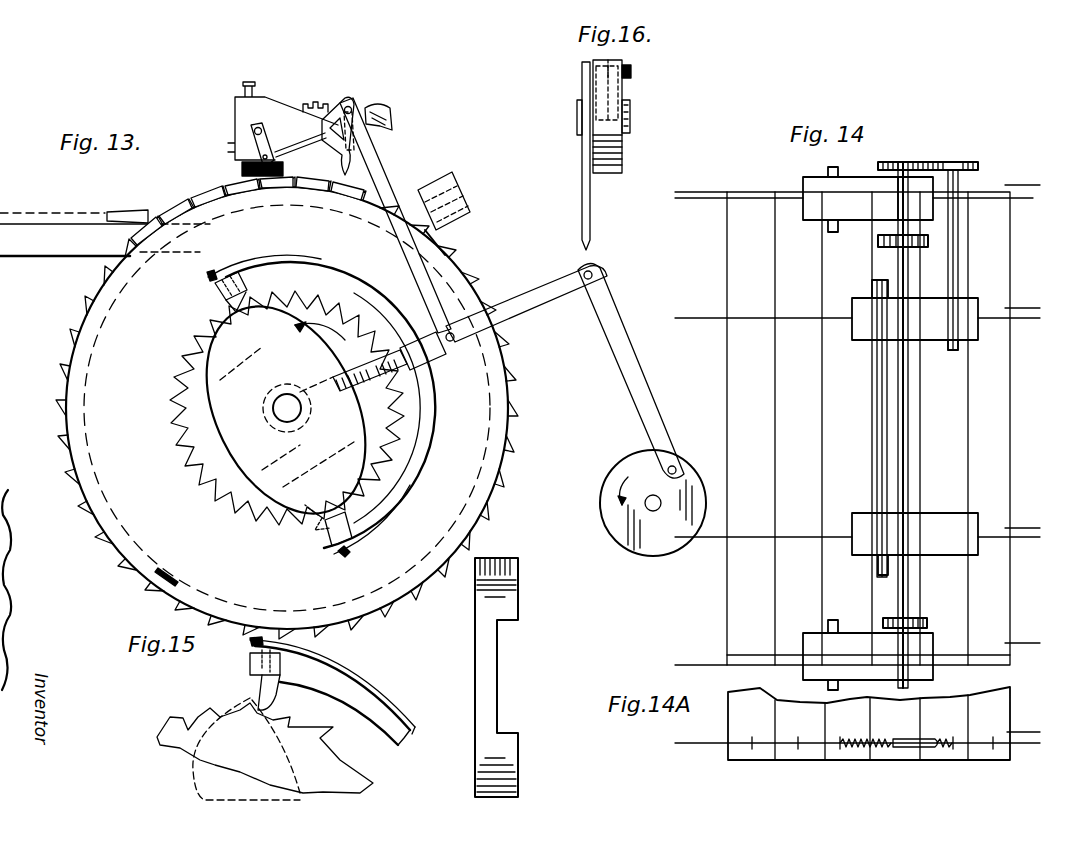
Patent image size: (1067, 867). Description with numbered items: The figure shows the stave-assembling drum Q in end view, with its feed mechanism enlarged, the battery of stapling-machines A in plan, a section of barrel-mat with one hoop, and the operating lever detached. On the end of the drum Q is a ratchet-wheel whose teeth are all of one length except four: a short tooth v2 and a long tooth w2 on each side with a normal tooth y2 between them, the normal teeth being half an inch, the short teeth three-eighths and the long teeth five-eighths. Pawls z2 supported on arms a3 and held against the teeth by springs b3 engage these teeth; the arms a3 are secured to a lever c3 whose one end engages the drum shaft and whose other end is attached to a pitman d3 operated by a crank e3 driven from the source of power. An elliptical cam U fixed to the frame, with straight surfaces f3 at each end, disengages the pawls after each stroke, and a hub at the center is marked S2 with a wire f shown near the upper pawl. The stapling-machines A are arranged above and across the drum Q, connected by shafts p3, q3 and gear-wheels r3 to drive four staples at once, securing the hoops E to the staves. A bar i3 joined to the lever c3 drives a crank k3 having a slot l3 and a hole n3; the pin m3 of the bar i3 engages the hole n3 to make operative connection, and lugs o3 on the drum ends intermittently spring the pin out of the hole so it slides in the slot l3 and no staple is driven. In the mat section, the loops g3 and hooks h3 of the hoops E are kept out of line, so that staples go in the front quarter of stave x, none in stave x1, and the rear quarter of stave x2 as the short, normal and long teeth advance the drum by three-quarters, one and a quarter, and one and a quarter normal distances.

In FIG. 13, the stave-assembling drum Q is at (287, 408).
In FIG. 13, the lugs o3 is at (170, 572).
In FIG. 13, the crank k3 is at (355, 98).
In FIG. 16, the crank k3 is at (628, 158).
In FIG. 13, the slot l3 is at (349, 145).
In FIG. 16, the slot l3 is at (600, 86).
In FIG. 13, the bar i3 is at (388, 168).
In FIG. 13, the shaft p3 is at (445, 213).
In FIG. 13, the intermediate teeth y2 is at (175, 452).
In FIG. 15, the intermediate teeth y2 is at (292, 720).
In FIG. 13, the oval cam plate S2 is at (285, 413).
In FIG. 13, the arms a3 is at (385, 285).
In FIG. 13, the springs b3 is at (245, 265).
In FIG. 15, the springs b3 is at (332, 687).
In FIG. 13, the pawls z2 is at (230, 300).
In FIG. 15, the pawls z2 is at (258, 688).
In FIG. 13, the short teeth v2 is at (240, 297).
In FIG. 15, the short teeth v2 is at (242, 718).
In FIG. 13, the long teeth w2 is at (288, 312).
In FIG. 15, the long teeth w2 is at (330, 732).
In FIG. 13, the spring wire f is at (237, 307).
In FIG. 13, the straight surfaces f3 is at (312, 520).
In FIG. 13, the lever c3 is at (510, 312).
In FIG. 13, the pitman d3 is at (632, 352).
In FIG. 13, the crank e3 is at (622, 470).
In FIG. 16, the pin m3 is at (632, 70).
In FIG. 16, the hole n3 is at (618, 80).
In FIG. 14, the hoops E is at (857, 419).
In FIG. 14A, the hoops E is at (857, 723).
In FIG. 14, the stapling-machines A is at (890, 428).
In FIG. 14, the shaft q3 is at (905, 470).
In FIG. 14, the gear-wheels r3 is at (890, 618).
In FIG. 14A, the section x is at (846, 718).
In FIG. 14A, the stave x1 is at (893, 718).
In FIG. 14A, the stave x2 is at (942, 718).
In FIG. 14A, the hooks h3 is at (880, 748).
In FIG. 14A, the loops g3 is at (915, 748).
In FIG. 15, the elliptical cam U is at (480, 650).